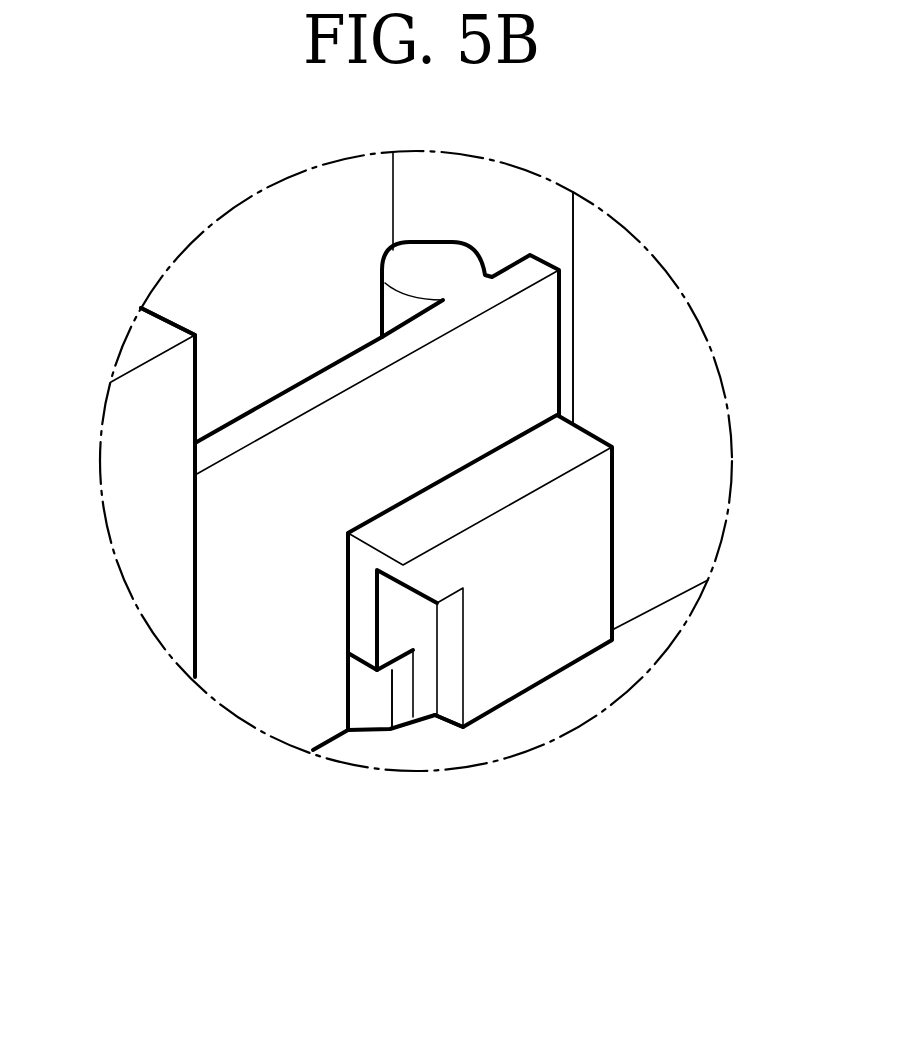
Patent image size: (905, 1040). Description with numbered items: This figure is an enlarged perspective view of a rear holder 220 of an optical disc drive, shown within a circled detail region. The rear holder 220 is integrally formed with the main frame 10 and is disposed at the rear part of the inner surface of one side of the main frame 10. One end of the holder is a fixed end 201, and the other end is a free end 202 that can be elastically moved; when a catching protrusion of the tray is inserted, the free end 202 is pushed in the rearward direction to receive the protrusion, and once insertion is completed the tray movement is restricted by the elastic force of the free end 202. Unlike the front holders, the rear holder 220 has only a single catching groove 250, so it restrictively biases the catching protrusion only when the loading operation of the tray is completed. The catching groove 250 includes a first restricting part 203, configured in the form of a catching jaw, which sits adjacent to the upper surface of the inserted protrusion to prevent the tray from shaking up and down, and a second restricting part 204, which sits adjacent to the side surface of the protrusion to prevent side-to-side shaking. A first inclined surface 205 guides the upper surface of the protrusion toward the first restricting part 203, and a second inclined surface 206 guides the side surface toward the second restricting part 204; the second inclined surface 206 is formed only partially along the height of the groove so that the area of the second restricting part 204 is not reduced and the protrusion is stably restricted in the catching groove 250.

The main frame 10 is at (160, 322).
The fixed end 201 is at (220, 582).
The free end 202 is at (543, 361).
The first restricting part 203 is at (448, 596).
The second restricting part 204 is at (392, 670).
The first inclined surface 205 is at (437, 597).
The second inclined surface 206 is at (393, 623).
The rear holder 220 is at (586, 292).
The catching groove 250 is at (440, 714).